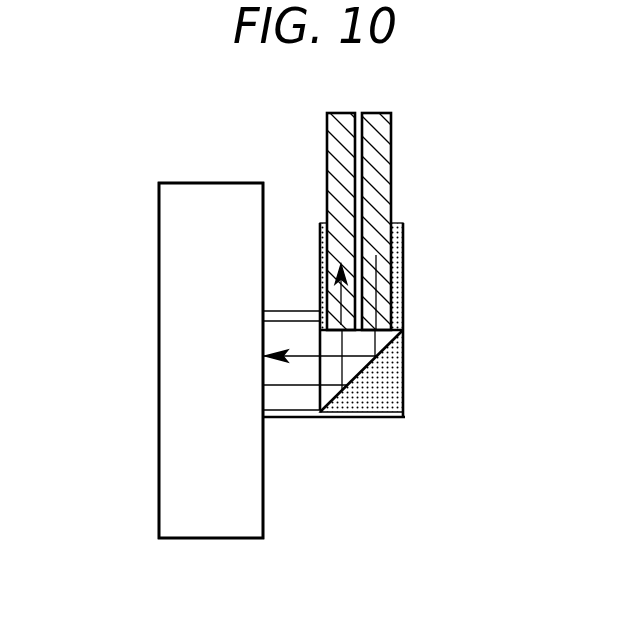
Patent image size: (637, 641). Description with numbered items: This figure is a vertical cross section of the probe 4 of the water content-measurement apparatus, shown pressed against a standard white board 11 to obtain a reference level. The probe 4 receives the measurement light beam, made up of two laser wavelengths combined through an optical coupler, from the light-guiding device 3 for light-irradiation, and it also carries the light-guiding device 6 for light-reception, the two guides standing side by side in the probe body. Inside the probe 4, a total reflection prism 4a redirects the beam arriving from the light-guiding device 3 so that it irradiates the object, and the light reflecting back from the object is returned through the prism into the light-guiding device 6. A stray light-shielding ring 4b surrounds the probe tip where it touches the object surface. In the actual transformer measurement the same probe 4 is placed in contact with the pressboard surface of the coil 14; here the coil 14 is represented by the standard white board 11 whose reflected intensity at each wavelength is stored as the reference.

The light-guiding device for light-irradiation 3 is at (374, 158).
The light-guiding device for light-reception 6 is at (327, 138).
The probe 4 is at (412, 272).
The total reflection prism 4a is at (405, 378).
The stray light-shielding ring 4b is at (287, 419).
The standard white board 11 is at (159, 254).
The coil 14 is at (156, 360).